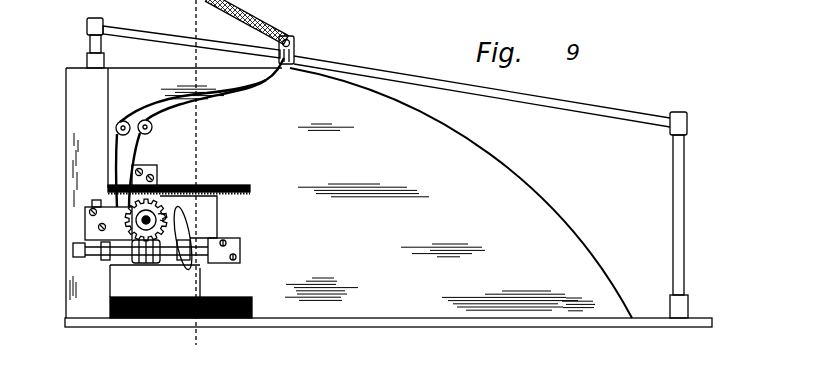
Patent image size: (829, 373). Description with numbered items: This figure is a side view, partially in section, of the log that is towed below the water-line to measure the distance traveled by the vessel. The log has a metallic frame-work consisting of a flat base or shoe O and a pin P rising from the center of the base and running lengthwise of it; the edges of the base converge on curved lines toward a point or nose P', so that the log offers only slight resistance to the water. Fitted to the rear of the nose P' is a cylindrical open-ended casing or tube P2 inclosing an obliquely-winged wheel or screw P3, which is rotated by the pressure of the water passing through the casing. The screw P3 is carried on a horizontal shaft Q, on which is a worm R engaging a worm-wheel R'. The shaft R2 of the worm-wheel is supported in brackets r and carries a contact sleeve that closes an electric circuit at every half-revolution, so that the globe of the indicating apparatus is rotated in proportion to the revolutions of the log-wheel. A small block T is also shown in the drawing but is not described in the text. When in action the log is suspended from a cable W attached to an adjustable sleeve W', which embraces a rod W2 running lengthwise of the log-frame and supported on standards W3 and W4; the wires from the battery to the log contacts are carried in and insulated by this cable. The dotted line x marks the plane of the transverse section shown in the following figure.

The cable W is at (247, 22).
The adjustable sleeve W' is at (305, 48).
The rod W2 is at (365, 71).
The standard W3 is at (672, 172).
The standard W4 is at (88, 47).
The pin P is at (396, 193).
The nose P' is at (174, 193).
The casing P2 is at (214, 188).
The winged wheel P3 is at (186, 243).
The worm R is at (146, 265).
The worm-wheel R' is at (171, 201).
The shaft R2 is at (100, 224).
The brackets r is at (154, 222).
The pulley block T is at (155, 178).
The horizontal shaft Q is at (236, 263).
The base O is at (388, 331).
The section line x is at (196, 181).